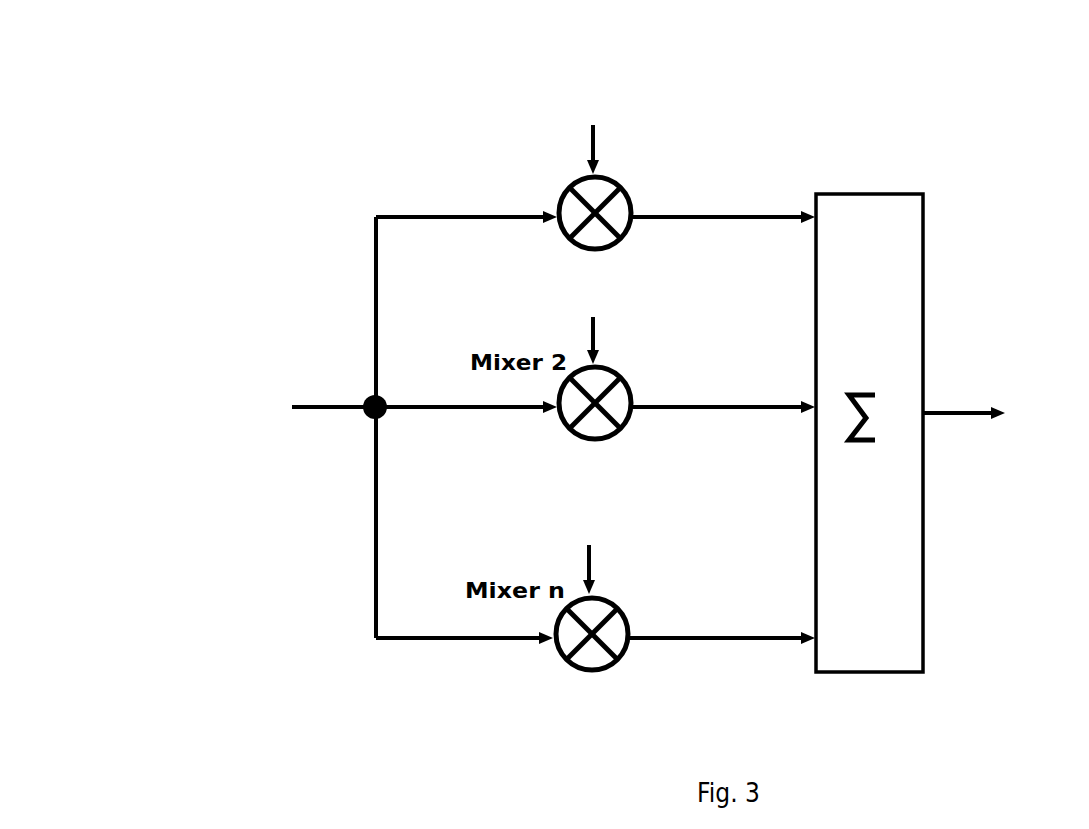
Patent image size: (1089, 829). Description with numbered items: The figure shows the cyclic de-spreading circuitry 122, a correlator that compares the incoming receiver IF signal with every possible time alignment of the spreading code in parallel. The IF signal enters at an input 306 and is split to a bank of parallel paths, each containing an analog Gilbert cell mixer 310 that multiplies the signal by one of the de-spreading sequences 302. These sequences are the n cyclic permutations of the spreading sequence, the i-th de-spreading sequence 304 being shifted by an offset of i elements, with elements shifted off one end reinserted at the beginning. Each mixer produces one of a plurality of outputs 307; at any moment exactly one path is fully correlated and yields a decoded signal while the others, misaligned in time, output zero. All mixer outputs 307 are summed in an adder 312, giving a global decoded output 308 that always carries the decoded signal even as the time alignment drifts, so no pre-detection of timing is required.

The de-spreading circuitry 122 is at (262, 142).
The de-spreading sequences 302 is at (462, 280).
The i-th de-spreading sequence 304 is at (462, 280).
The input 306 is at (364, 400).
The outputs 307 is at (722, 427).
The output 308 is at (994, 446).
The analog Gilbert cell mixers 310 is at (623, 185).
The adder 312 is at (869, 433).